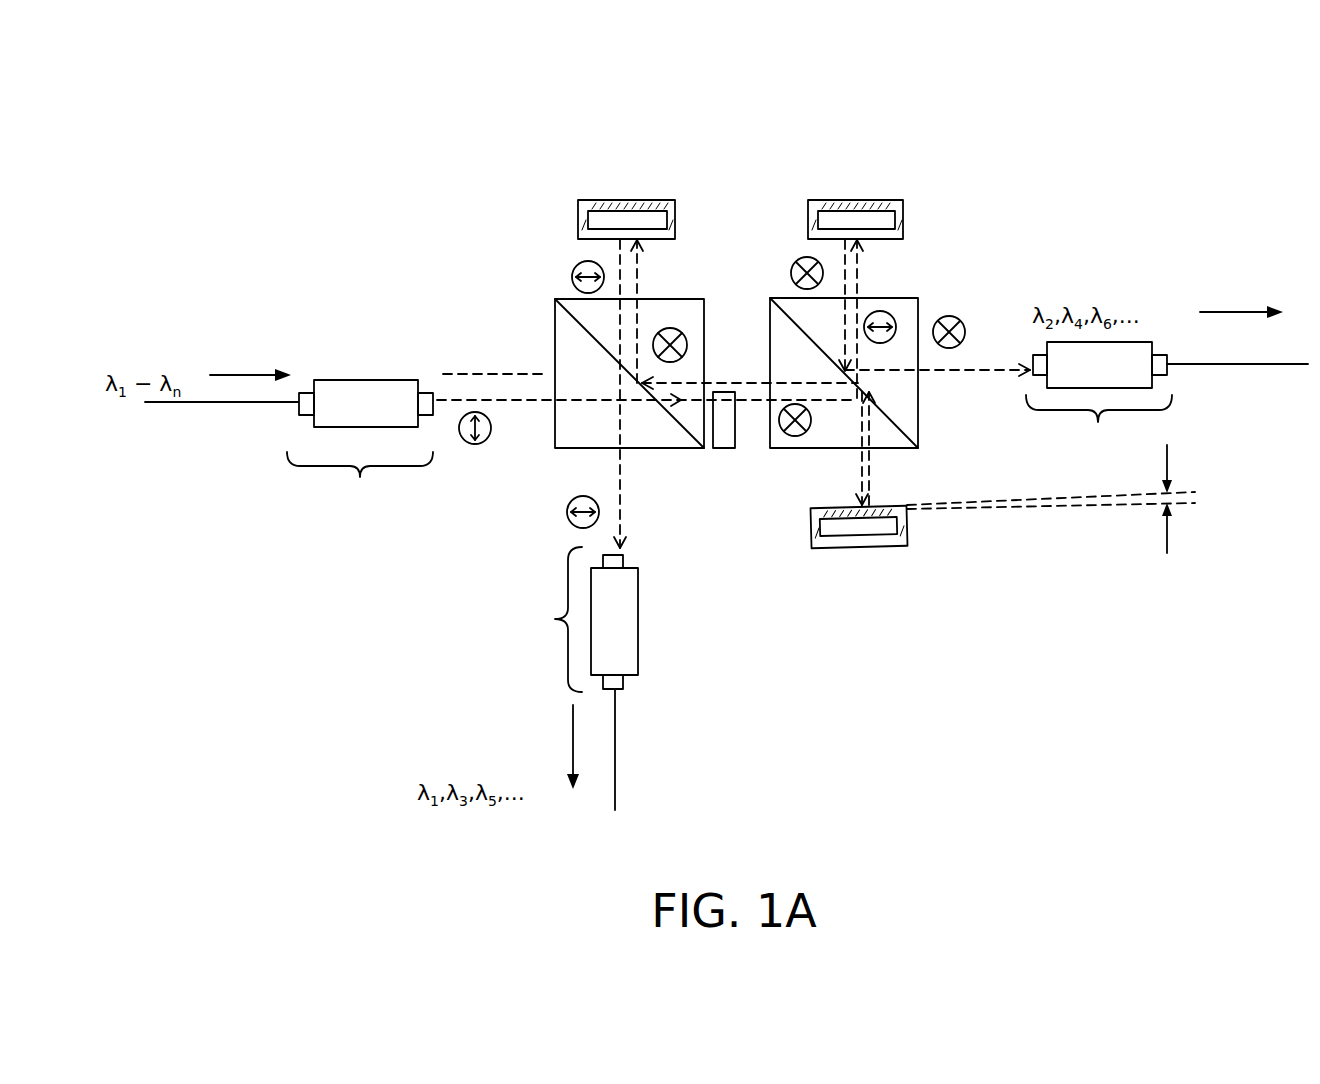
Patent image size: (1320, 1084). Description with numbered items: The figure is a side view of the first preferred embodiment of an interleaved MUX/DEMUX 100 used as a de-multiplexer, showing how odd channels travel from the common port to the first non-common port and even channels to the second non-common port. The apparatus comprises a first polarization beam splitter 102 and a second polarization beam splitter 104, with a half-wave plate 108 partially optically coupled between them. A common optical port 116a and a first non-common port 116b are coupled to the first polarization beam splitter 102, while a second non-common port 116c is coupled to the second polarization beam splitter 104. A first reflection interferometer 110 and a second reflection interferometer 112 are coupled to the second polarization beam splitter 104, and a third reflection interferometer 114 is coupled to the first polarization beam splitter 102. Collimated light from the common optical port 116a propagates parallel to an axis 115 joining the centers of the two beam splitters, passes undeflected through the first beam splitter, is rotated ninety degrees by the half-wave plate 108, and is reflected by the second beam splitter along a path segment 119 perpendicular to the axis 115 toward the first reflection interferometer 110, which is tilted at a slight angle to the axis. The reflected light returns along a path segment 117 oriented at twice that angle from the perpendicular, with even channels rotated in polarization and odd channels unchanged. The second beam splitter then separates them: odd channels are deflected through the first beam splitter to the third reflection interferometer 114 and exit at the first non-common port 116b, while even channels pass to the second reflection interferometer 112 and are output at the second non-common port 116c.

The interleaved MUX/DEMUX 100 is at (534, 76).
The first polarization beam splitter 102 is at (550, 432).
The second polarization beam splitter 104 is at (918, 420).
The half-wave plate 108 is at (725, 450).
The first reflection interferometer 110 is at (893, 545).
The second reflection interferometer 112 is at (888, 200).
The third reflection interferometer 114 is at (590, 200).
The axis 115 is at (485, 372).
The common optical port 116a is at (360, 447).
The first non-common port 116b is at (563, 678).
The second non-common port 116c is at (1167, 399).
The path segment 117 is at (860, 458).
The path segment 119 is at (872, 457).